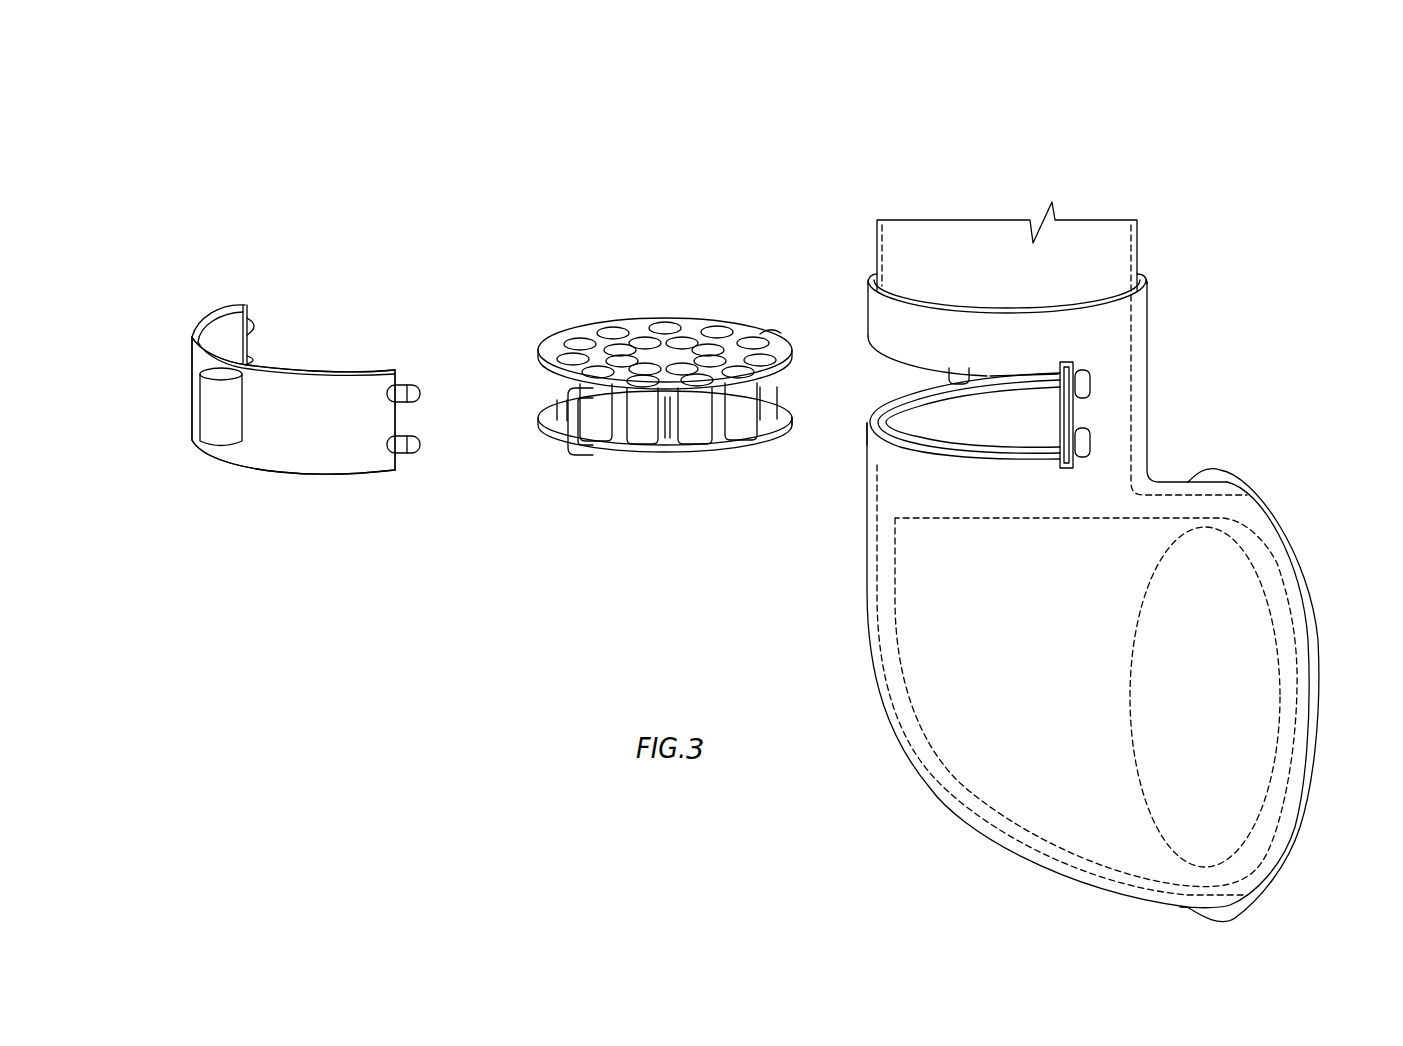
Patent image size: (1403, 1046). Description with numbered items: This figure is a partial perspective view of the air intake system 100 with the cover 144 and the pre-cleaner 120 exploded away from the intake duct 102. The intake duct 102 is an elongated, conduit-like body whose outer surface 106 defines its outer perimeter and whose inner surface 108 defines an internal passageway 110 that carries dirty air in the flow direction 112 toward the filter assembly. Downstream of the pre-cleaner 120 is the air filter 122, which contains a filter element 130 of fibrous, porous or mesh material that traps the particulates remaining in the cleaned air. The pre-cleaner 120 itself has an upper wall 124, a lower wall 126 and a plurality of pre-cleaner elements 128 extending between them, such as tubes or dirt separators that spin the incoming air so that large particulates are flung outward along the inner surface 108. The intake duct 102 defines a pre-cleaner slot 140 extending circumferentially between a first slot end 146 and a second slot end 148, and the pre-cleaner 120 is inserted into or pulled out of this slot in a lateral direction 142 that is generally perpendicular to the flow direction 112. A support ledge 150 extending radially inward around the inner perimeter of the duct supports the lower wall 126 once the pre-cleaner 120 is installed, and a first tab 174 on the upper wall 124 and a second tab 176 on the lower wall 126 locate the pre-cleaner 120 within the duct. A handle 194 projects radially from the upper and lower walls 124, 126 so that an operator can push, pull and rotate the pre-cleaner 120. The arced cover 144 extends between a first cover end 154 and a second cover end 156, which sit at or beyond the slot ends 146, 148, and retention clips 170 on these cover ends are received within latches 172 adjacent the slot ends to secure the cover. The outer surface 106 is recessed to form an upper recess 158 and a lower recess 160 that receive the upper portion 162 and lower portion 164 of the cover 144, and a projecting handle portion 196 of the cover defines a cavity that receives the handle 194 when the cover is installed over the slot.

The air intake system 100 is at (1238, 157).
The intake duct 102 is at (1160, 323).
The outer surface 106 is at (1122, 395).
The inner surface 108 is at (937, 437).
The internal passageway 110 is at (1138, 245).
The flow direction 112 is at (1010, 145).
The pre-cleaner 120 is at (568, 298).
The air filter 122 is at (948, 802).
The upper wall 124 is at (553, 350).
The lower wall 126 is at (672, 455).
The pre-cleaner elements 128 is at (640, 438).
The filter element 130 is at (1272, 625).
The pre-cleaner slot 140 is at (864, 374).
The lateral direction 142 is at (534, 560).
The cover 144 is at (305, 270).
The first slot end 146 is at (1072, 415).
The second slot end 148 is at (987, 370).
The support ledge 150 is at (1006, 384).
The first cover end 154 is at (400, 467).
The second cover end 156 is at (245, 304).
The upper recess 158 is at (1020, 370).
The lower recess 160 is at (977, 460).
The upper portion 162 is at (337, 368).
The lower portion 164 is at (285, 472).
The retention clips 170 is at (262, 325).
The latches 172 is at (952, 370).
The first tab 174 is at (772, 332).
The second tab 176 is at (780, 396).
The handle 194 is at (566, 450).
The handle portion 196 is at (210, 420).